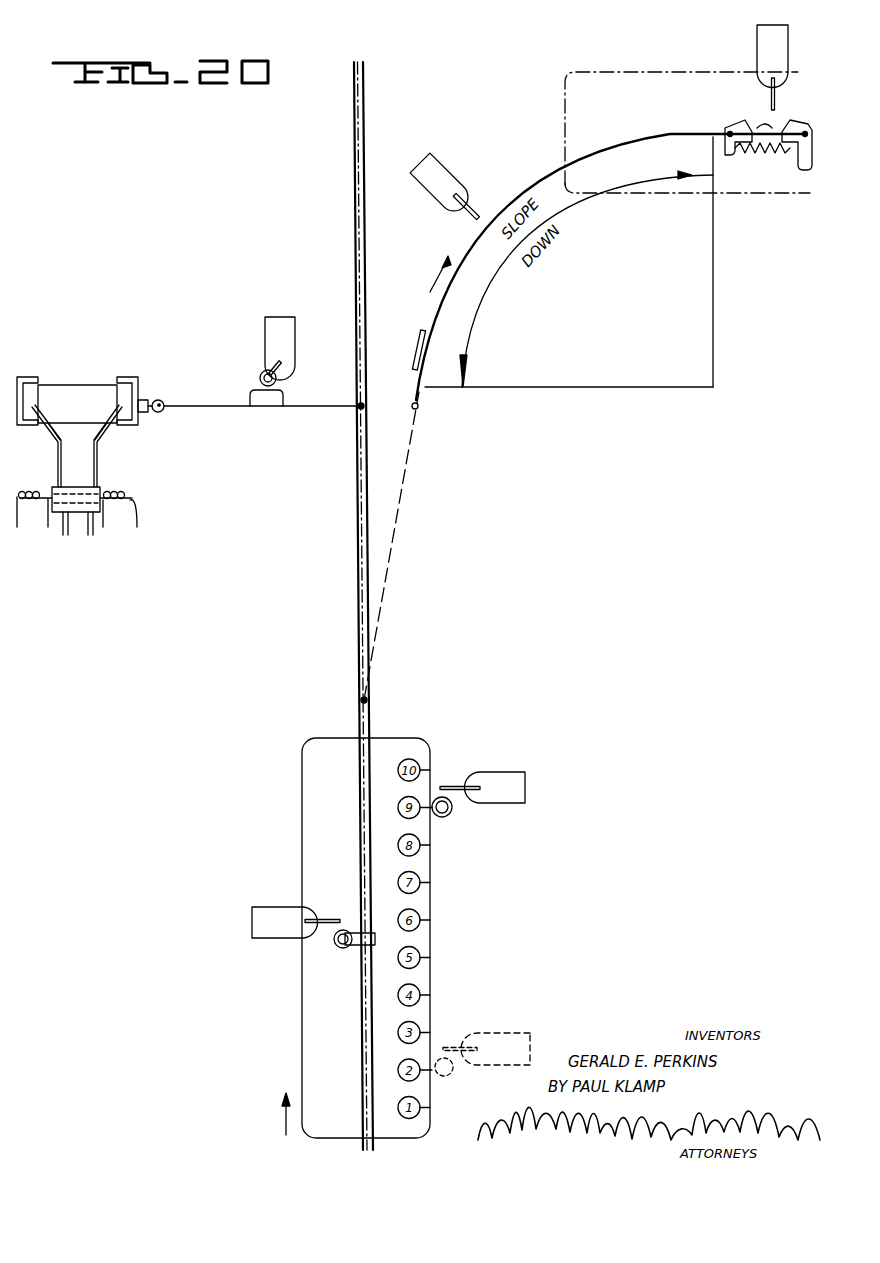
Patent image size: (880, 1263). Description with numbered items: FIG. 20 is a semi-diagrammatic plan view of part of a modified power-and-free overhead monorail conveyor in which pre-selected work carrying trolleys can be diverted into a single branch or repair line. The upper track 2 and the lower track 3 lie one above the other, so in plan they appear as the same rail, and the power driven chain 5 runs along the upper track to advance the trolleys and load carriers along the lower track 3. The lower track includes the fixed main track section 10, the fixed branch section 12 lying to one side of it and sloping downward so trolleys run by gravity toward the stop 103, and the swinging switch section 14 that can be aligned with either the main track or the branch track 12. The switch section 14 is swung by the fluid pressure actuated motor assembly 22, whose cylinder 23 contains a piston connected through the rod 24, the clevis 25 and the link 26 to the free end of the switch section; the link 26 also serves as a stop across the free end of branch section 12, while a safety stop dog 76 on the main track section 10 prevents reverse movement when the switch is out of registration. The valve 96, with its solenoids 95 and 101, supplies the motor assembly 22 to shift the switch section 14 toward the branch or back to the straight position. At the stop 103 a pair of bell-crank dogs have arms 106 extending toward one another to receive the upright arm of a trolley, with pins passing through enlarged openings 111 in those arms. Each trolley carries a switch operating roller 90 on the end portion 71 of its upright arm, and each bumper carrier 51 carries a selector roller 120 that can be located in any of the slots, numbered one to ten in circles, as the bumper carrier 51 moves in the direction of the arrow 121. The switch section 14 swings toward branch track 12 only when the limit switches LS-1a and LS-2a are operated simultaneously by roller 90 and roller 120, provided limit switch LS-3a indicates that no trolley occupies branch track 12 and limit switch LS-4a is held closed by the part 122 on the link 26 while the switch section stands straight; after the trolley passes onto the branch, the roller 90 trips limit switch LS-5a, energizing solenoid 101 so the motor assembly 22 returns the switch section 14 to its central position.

The upper track 2 is at (359, 517).
The lower track 3 is at (532, 178).
The power driven chain 5 is at (367, 288).
The main track section 10 is at (361, 236).
The branch track section 12 is at (468, 248).
The switch section 14 is at (361, 592).
The fluid pressure actuated motor assembly 22 is at (63, 384).
The cylinder 23 is at (84, 397).
The rod 24 is at (146, 398).
The clevis 25 is at (162, 409).
The link 26 is at (222, 407).
The bumper carrier 51 is at (641, 67).
The end portion of arm 71 is at (355, 953).
The safety stop dog 76 is at (413, 350).
The switch operating roller 90 is at (343, 930).
The solenoid 95 is at (35, 505).
The valve 96 is at (77, 493).
The solenoid 101 is at (115, 493).
The stop 103 is at (731, 115).
The arms of dogs 106 is at (770, 130).
The enlarged openings 111 is at (777, 152).
The selector roller 120 is at (451, 817).
The arrow 121 is at (283, 1118).
The part on link 122 is at (280, 401).
The limit switch LS-1a is at (282, 925).
The limit switch LS-2a is at (527, 790).
The limit switch LS-3a is at (772, 36).
The limit switch LS-4a is at (282, 325).
The limit switch LS-5a is at (452, 180).